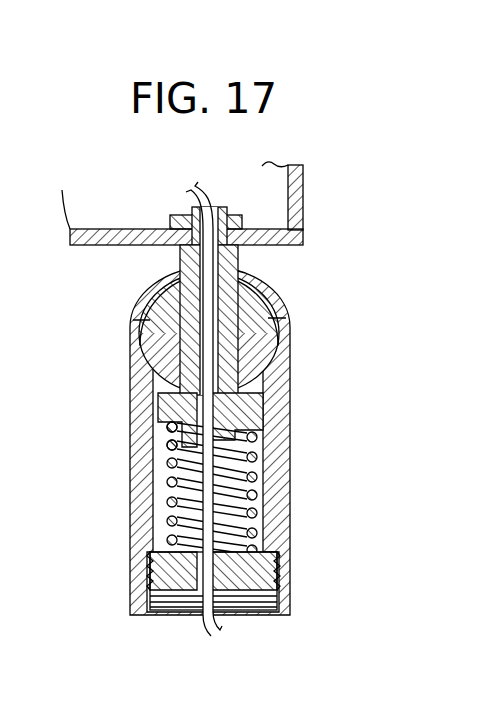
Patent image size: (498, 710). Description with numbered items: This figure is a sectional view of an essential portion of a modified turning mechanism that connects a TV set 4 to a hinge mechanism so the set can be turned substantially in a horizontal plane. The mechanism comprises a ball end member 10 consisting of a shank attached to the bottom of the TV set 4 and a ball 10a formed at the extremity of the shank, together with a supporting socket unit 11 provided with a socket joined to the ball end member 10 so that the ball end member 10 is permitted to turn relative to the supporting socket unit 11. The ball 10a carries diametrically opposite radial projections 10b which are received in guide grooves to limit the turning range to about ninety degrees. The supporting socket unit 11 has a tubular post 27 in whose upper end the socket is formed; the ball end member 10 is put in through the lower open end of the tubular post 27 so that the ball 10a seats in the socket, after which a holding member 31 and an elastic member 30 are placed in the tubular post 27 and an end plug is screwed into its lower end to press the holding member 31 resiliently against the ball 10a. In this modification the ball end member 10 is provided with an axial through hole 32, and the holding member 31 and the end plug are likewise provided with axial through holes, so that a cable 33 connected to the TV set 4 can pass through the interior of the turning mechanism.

The TV set 4 is at (303, 211).
The ball end member 10 is at (240, 255).
The ball 10a is at (280, 290).
The radial projections 10b is at (285, 335).
The supporting socket unit 11 is at (124, 306).
The tubular post 27 is at (290, 455).
The elastic member 30 is at (172, 513).
The holding member 31 is at (172, 468).
The axial through hole 32 is at (270, 375).
The cable 33 is at (290, 523).